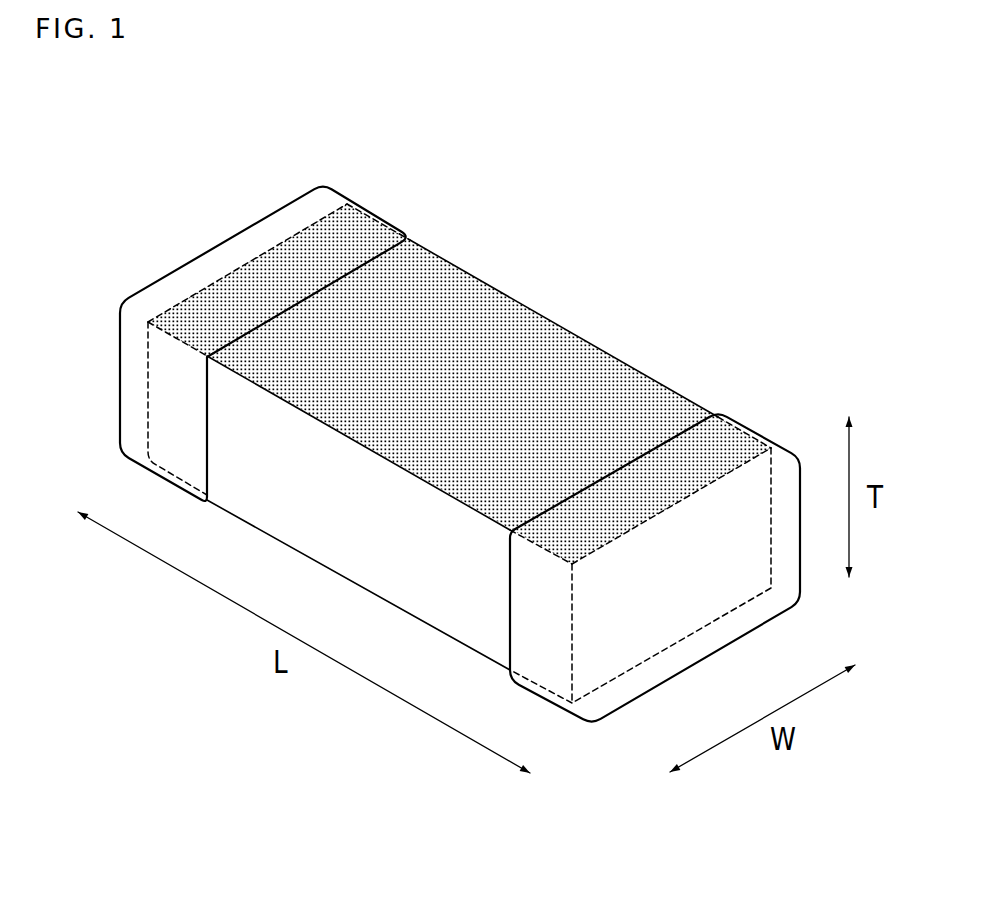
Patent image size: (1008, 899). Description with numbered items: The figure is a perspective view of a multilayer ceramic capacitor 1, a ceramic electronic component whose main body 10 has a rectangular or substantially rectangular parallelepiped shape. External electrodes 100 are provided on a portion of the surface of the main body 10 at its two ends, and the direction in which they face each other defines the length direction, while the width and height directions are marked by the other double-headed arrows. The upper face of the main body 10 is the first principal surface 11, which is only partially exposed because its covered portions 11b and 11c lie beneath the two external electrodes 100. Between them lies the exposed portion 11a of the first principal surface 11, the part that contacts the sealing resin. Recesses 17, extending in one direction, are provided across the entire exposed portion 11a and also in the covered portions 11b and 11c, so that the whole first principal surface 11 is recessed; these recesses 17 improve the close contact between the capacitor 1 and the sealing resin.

The multilayer ceramic capacitor 1 is at (782, 277).
The main body 10 is at (533, 340).
The first principal surface 11 is at (493, 425).
The exposed portion of the first principal surface 11a is at (610, 390).
The covered portion of the first principal surface 11b is at (348, 243).
The covered portion of the first principal surface 11c is at (723, 443).
The recesses 17 is at (467, 313).
The external electrodes 100 is at (267, 237).